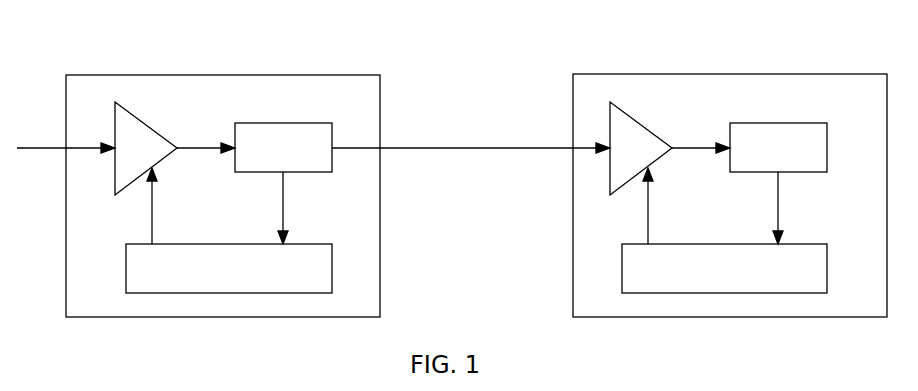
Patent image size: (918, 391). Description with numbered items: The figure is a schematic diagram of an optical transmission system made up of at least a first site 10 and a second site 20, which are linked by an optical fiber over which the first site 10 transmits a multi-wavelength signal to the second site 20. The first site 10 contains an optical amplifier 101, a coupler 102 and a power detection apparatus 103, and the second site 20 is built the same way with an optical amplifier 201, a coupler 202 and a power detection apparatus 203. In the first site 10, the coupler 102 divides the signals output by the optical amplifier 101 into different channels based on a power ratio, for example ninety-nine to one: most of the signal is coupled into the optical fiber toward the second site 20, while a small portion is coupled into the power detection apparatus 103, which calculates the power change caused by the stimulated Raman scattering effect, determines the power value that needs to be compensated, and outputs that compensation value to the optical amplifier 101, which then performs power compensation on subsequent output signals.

The first site 10 is at (173, 74).
The optical amplifier 101 is at (143, 120).
The coupler 102 is at (260, 123).
The power detection apparatus 103 is at (190, 244).
The second site 20 is at (695, 74).
The optical amplifier 201 is at (638, 120).
The coupler 202 is at (767, 123).
The power detection apparatus 203 is at (685, 244).